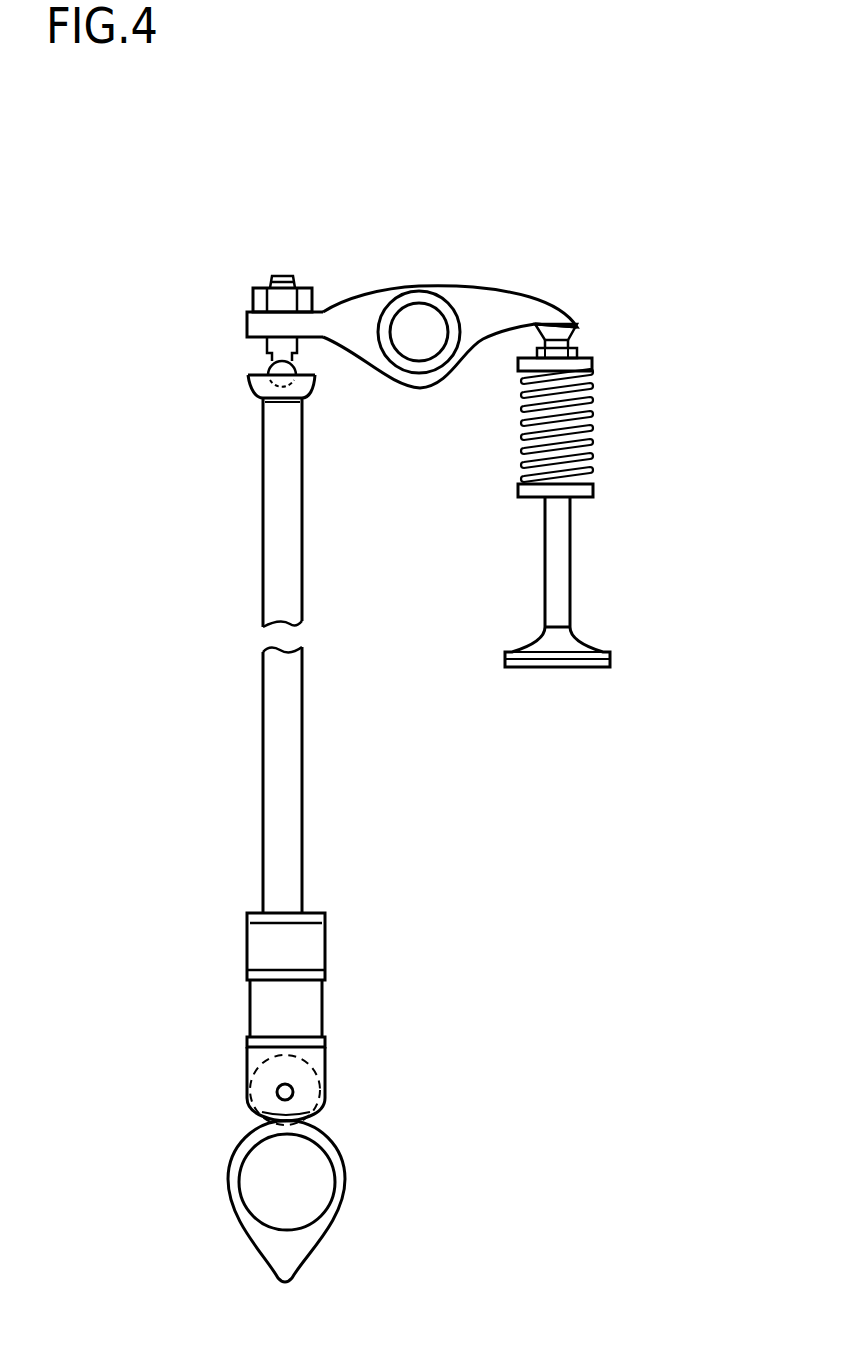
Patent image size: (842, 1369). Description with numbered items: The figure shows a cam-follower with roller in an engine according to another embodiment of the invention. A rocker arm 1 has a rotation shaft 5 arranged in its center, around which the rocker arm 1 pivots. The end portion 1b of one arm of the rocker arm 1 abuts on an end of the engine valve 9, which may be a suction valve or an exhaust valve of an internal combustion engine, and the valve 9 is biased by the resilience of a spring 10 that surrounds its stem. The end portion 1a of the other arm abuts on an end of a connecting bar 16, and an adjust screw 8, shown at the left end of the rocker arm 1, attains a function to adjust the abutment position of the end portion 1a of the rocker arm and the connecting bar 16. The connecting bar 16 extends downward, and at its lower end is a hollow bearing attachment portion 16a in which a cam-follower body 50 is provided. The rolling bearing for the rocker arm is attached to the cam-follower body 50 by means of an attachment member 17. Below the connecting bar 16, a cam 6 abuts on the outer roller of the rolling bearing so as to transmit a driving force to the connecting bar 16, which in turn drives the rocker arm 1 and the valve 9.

The rocker arm 1 is at (488, 287).
The end portion of the other arm of rocker arm 1a is at (220, 271).
The end portion of one arm of rocker arm 1b is at (570, 276).
The rotation shaft 5 is at (419, 322).
The adjust screw 8 is at (295, 276).
The engine valve 9 is at (560, 547).
The spring 10 is at (597, 422).
The connecting bar 16 is at (300, 547).
The bearing attachment portion 16a is at (300, 1000).
The attachment member 17 is at (228, 1080).
The cam-follower body 50 is at (366, 1097).
The cam 6 is at (302, 1252).